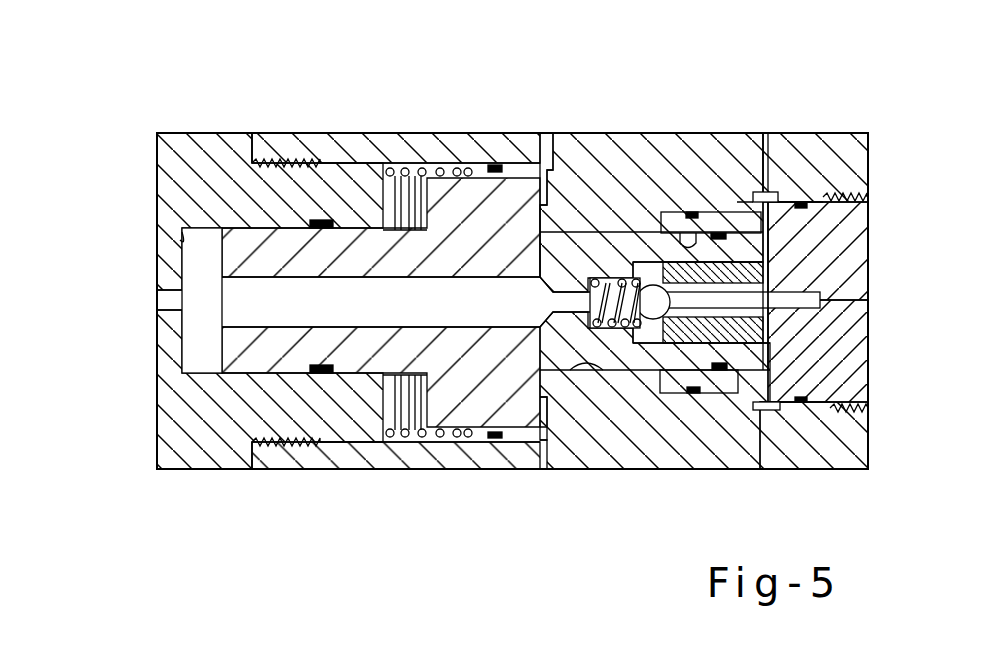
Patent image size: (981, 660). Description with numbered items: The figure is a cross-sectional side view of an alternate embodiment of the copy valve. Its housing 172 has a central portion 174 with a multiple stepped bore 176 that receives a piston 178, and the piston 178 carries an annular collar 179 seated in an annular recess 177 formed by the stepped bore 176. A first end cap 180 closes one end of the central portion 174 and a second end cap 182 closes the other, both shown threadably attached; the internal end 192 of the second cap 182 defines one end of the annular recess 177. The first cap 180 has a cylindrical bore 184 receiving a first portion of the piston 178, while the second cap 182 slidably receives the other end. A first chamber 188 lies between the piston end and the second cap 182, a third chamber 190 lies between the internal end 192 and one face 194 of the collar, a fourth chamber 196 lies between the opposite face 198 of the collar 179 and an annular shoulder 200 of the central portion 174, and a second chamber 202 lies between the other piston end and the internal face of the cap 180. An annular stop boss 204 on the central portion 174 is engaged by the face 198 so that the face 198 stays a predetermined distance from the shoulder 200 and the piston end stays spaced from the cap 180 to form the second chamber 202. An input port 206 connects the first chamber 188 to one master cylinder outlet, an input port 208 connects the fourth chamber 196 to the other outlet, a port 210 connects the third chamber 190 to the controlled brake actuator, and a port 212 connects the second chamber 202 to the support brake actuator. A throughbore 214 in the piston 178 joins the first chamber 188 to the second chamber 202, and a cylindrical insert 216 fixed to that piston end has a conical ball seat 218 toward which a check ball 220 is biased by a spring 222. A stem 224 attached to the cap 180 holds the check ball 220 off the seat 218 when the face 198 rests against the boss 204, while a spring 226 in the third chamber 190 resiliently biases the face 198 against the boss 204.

The housing 172 is at (498, 134).
The central portion 174 is at (318, 469).
The multiple stepped bore 176 is at (590, 368).
The annular recess 177 is at (503, 469).
The piston 178 is at (487, 352).
The annular collar 179 is at (473, 138).
The first end cap 180 is at (868, 208).
The second end cap 182 is at (157, 181).
The cylindrical bore 184 is at (182, 237).
The first chamber 188 is at (193, 275).
The third chamber 190 is at (423, 138).
The internal end 192 is at (343, 138).
The face of the annular collar 194 is at (448, 138).
The fourth chamber 196 is at (548, 420).
The opposite face of the annular collar 198 is at (533, 138).
The annular shoulder 200 is at (565, 193).
The second chamber 202 is at (767, 253).
The annular stop boss 204 is at (463, 469).
The input port 206 is at (157, 293).
The input port 208 is at (547, 138).
The port 210 is at (403, 138).
The port 212 is at (766, 140).
The throughbore 214 is at (278, 313).
The cylindrical insert 216 is at (719, 283).
The conical ball seat 218 is at (650, 343).
The check ball 220 is at (661, 262).
The spring 222 is at (620, 278).
The stem 224 is at (770, 283).
The spring 226 is at (412, 440).